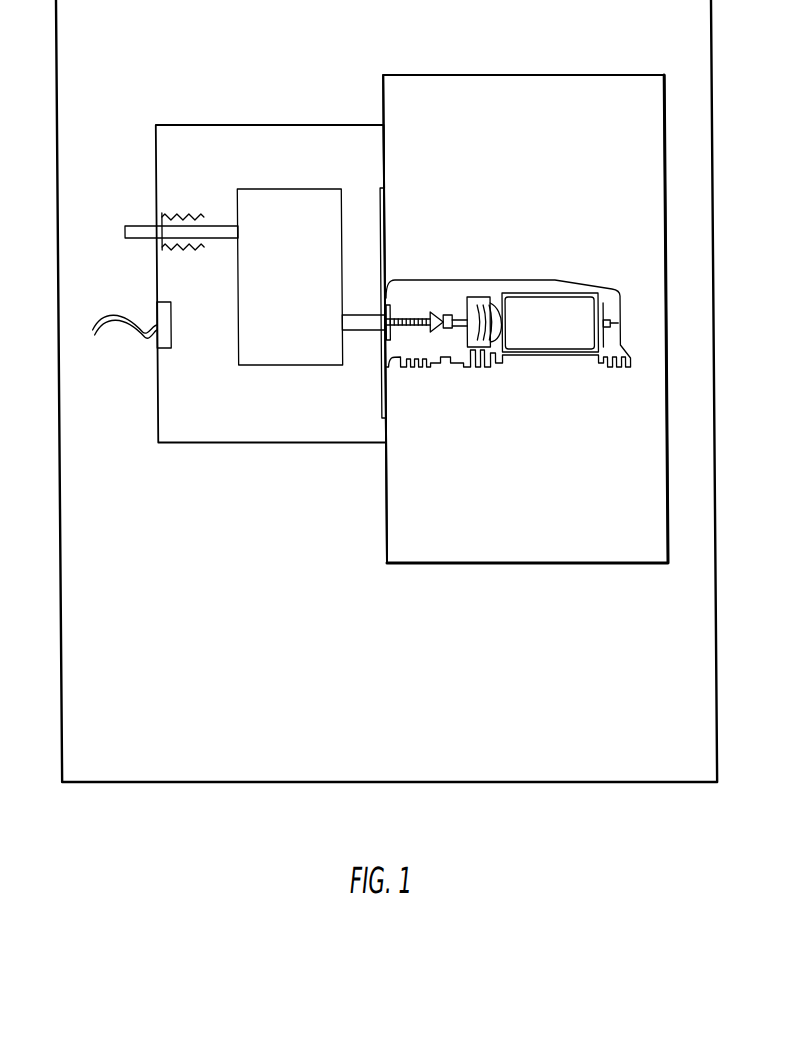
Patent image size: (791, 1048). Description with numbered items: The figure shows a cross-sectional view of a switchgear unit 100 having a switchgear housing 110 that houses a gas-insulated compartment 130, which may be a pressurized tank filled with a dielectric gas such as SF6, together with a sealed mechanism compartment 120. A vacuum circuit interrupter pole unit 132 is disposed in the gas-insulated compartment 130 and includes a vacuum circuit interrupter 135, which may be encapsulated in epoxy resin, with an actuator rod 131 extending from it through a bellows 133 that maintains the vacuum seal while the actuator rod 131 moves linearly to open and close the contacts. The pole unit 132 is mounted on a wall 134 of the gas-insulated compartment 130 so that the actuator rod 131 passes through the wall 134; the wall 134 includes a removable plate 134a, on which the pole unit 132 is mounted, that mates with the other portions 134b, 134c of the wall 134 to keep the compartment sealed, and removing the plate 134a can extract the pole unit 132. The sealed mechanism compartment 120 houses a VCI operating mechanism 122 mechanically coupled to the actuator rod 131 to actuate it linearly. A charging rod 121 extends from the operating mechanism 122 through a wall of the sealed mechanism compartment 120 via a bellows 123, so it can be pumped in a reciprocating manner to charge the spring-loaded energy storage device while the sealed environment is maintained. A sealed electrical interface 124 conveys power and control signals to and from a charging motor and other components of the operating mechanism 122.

The switchgear unit 100 is at (415, 426).
The switchgear housing 110 is at (711, 613).
The sealed mechanism compartment 120 is at (216, 443).
The charging rod 121 is at (123, 234).
The VCI operating mechanism 122 is at (272, 189).
The bellows 123 is at (178, 216).
The sealed electrical interface 124 is at (168, 335).
The gas-insulated compartment 130 is at (588, 563).
The actuator rod 131 is at (365, 330).
The vacuum circuit interrupter pole unit 132 is at (508, 320).
The bellows 133 is at (482, 305).
The wall 134 is at (383, 319).
The removable plate 134a is at (381, 215).
The wall portion 134b is at (383, 150).
The wall portion 134c is at (383, 513).
The vacuum circuit interrupter 135 is at (566, 332).